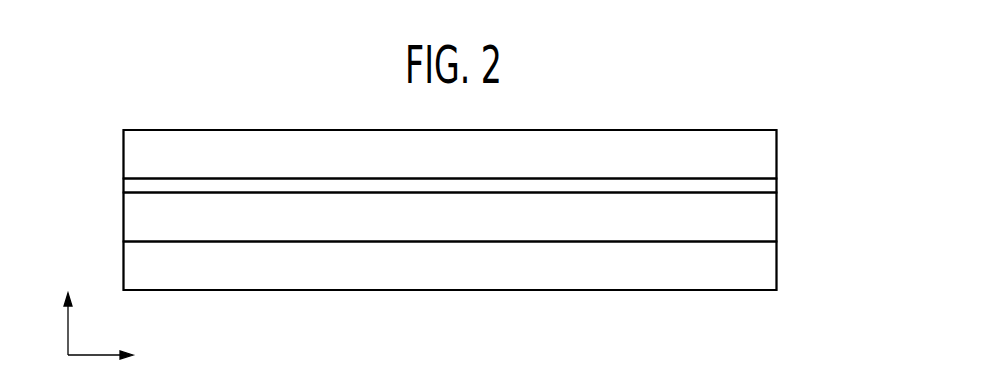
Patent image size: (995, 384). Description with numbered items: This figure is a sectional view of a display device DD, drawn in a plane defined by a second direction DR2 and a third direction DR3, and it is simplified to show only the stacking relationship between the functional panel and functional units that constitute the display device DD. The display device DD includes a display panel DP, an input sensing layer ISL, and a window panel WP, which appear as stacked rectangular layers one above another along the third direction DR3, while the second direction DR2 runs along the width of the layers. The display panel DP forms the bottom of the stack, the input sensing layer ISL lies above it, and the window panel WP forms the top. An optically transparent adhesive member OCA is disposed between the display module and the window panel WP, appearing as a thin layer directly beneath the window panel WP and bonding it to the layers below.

The display device DD is at (782, 75).
The window panel WP is at (770, 150).
The optically transparent adhesive member OCA is at (770, 183).
The input sensing layer ISL is at (770, 219).
The display panel DP is at (770, 266).
The third direction DR3 is at (67, 307).
The second direction DR2 is at (122, 359).